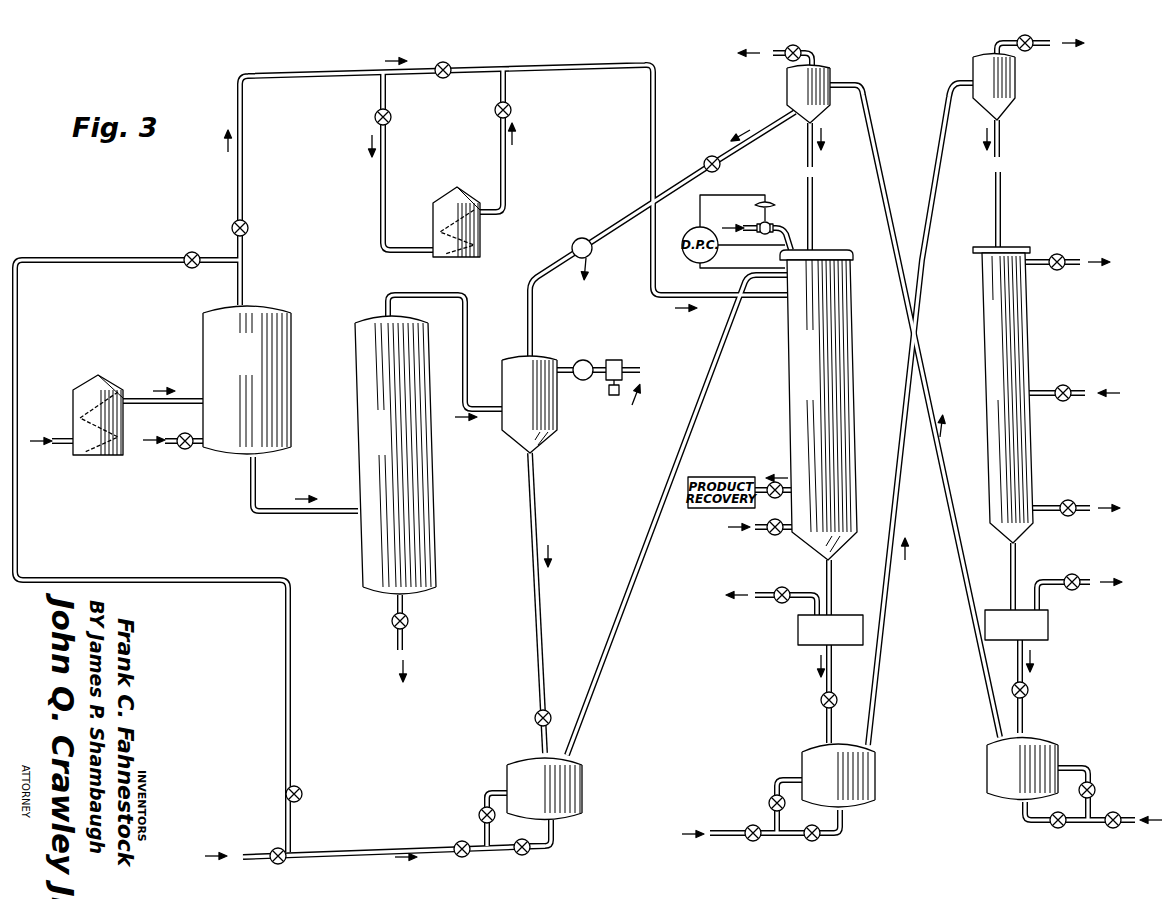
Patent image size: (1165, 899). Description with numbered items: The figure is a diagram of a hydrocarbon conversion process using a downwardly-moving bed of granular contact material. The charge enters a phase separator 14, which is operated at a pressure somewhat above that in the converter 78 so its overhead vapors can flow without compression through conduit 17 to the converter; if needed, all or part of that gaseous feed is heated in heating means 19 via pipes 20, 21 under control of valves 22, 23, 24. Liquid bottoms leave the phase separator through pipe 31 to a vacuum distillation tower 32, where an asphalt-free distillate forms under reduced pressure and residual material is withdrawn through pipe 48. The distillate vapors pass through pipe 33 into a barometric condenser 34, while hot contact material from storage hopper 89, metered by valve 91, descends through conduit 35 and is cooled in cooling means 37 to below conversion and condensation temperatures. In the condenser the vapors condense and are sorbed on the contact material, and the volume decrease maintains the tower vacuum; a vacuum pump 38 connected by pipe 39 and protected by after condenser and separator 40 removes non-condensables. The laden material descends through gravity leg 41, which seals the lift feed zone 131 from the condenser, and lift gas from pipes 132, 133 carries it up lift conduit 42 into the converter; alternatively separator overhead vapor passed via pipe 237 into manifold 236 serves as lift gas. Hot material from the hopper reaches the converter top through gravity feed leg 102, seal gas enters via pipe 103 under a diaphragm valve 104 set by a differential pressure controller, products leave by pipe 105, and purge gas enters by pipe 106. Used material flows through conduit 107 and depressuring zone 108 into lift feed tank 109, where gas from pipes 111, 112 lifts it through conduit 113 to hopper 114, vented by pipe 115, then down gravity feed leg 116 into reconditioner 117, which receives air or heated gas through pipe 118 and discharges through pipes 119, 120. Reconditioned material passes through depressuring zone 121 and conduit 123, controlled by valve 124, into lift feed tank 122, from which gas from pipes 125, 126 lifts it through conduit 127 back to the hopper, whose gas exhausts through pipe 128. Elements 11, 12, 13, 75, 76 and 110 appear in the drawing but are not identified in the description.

The charge inlet line 11 is at (68, 439).
The charge heater 12 is at (73, 393).
The heated charge line 13 is at (139, 399).
The phase separator 14 is at (247, 380).
The conduit 17 is at (244, 277).
The heating means 19 is at (480, 234).
The pipe 20 is at (380, 189).
The pipe 21 is at (507, 171).
The valve 22 is at (374, 118).
The valve 23 is at (439, 79).
The valve 24 is at (495, 115).
The pipe 31 is at (251, 489).
The vacuum distillation tower 32 is at (356, 395).
The pipe 33 is at (461, 323).
The barometric condenser 34 is at (560, 412).
The conduit 35 is at (533, 303).
The cooling means 37 is at (573, 244).
The vacuum pump 38 is at (624, 361).
The pipe 39 is at (575, 364).
The after condenser and separator 40 is at (568, 385).
The gravity leg 41 is at (541, 678).
The lift conduit 42 is at (597, 701).
The pipe 48 is at (405, 637).
The inlet line 75 is at (170, 446).
The valve 76 is at (188, 451).
The converter 78 is at (818, 405).
The storage hopper 89 is at (787, 82).
The valve 91 is at (706, 160).
The gravity feed leg 102 is at (816, 189).
The pipe 103 is at (788, 231).
The diaphragm valve 104 is at (769, 200).
The pipe 105 is at (786, 493).
The pipe 106 is at (762, 530).
The conduit 107 is at (833, 577).
The depressuring zone 108 is at (797, 642).
The lift feed tank 109 is at (876, 778).
The valve 110 is at (821, 700).
The pipe 111 is at (773, 781).
The pipe 112 is at (845, 819).
The conduit 113 is at (890, 590).
The hopper 114 is at (1017, 87).
The pipe 115 is at (1040, 48).
The gravity feed leg 116 is at (1003, 183).
The reconditioner 117 is at (1030, 296).
The pipe 118 is at (1072, 400).
The pipe 119 is at (1070, 256).
The pipe 120 is at (1082, 502).
The depressuring zone 121 is at (1050, 612).
The lift feed tank 122 is at (987, 766).
The conduit 123 is at (1019, 560).
The valve 124 is at (1029, 690).
The pipe 125 is at (1092, 776).
The pipe 126 is at (1018, 817).
The conduit 127 is at (950, 497).
The pipe 128 is at (818, 55).
The lift feed zone 131 is at (506, 766).
The pipe 132 is at (485, 797).
The pipe 133 is at (553, 831).
The manifold 236 is at (385, 846).
The pipe 237 is at (234, 578).